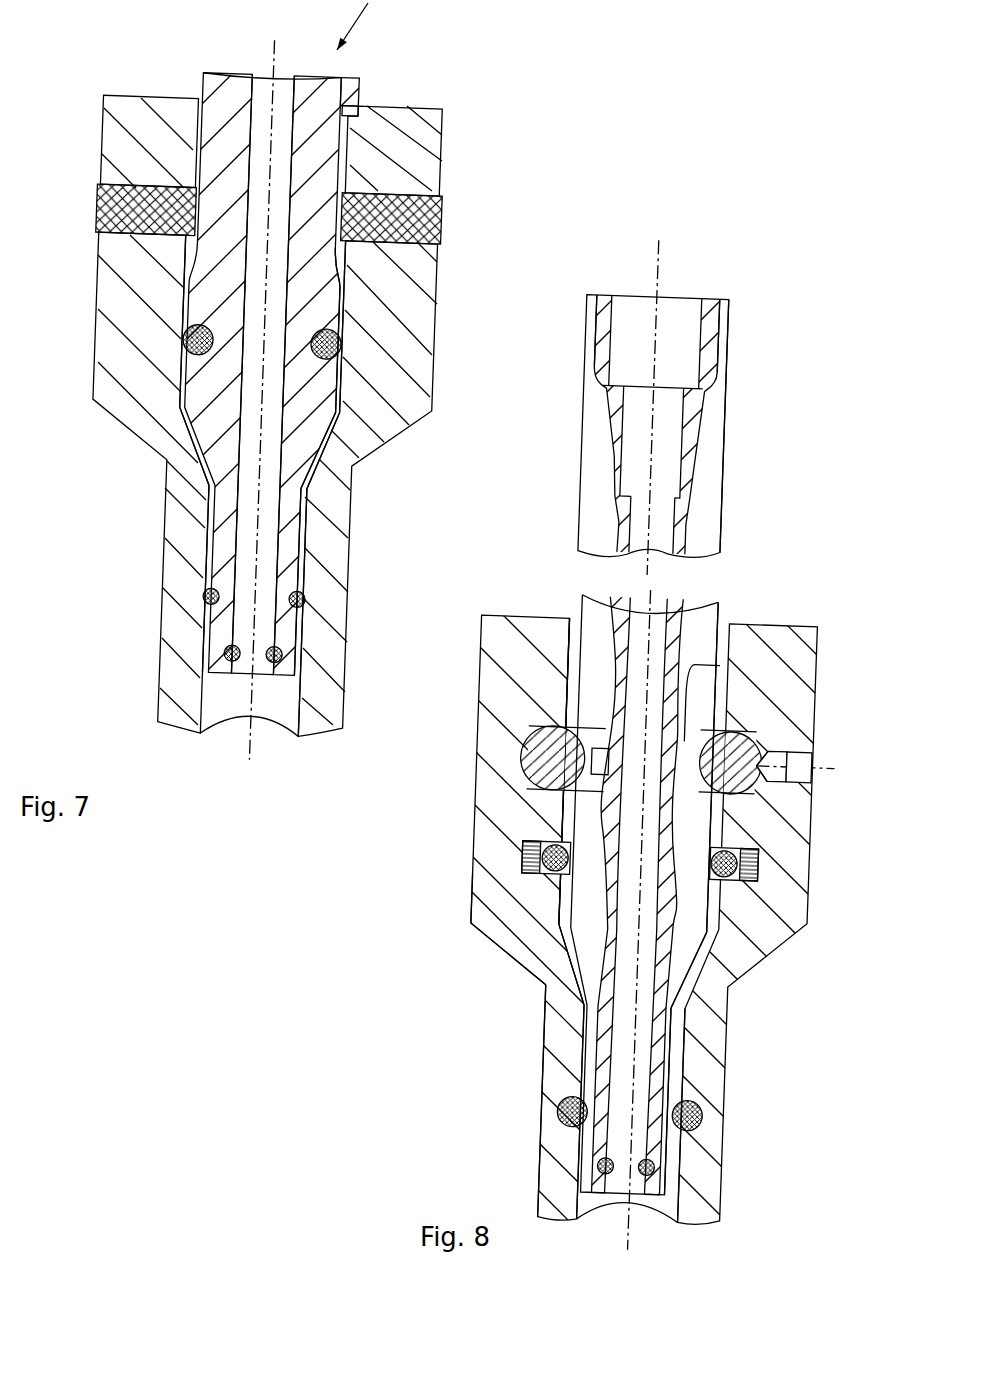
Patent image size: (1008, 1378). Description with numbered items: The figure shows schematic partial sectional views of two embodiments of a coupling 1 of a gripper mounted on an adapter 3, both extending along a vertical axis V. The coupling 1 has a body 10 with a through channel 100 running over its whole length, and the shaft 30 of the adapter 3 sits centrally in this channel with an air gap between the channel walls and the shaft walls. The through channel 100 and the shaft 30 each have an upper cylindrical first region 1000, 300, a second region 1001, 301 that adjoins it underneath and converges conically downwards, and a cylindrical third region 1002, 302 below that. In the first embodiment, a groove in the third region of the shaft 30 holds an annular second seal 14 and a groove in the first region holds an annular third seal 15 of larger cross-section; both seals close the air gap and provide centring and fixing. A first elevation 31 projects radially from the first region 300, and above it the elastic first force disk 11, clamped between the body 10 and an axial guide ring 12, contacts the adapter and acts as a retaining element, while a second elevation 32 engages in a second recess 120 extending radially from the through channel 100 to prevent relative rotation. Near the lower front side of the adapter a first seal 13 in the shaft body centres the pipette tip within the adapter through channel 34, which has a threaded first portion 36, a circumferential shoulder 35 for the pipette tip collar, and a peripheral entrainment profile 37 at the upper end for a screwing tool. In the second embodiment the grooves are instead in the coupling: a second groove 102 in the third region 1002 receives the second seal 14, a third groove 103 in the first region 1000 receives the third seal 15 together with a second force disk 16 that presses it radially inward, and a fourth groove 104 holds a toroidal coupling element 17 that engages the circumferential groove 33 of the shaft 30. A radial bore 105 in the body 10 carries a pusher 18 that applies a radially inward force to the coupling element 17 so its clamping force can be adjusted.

In FIG. 7, the coupling 1 is at (516, 70).
In FIG. 8, the coupling 1 is at (468, 605).
In FIG. 8, the adapter 3 is at (659, 210).
In FIG. 7, the vertical axis V is at (268, 58).
In FIG. 8, the vertical axis V is at (657, 262).
In FIG. 7, the body 10 is at (405, 407).
In FIG. 7, the through channel 100 is at (197, 105).
In FIG. 8, the through channel 100 is at (575, 620).
In FIG. 7, the first region 1000 is at (182, 298).
In FIG. 8, the first region 1000 is at (560, 812).
In FIG. 7, the second region 1001 is at (168, 440).
In FIG. 8, the second region 1001 is at (522, 960).
In FIG. 7, the third region 1002 is at (168, 670).
In FIG. 8, the third region 1002 is at (552, 1070).
In FIG. 8, the second groove 102 is at (722, 1142).
In FIG. 8, the third groove 103 is at (515, 903).
In FIG. 8, the fourth groove 104 is at (772, 812).
In FIG. 8, the radial bore 105 is at (790, 780).
In FIG. 7, the first force disk 11 is at (432, 230).
In FIG. 7, the axial guide ring 12 is at (425, 157).
In FIG. 7, the second recess 120 is at (365, 110).
In FIG. 7, the first seal 13 is at (278, 660).
In FIG. 8, the first seal 13 is at (598, 1163).
In FIG. 7, the second seal 14 is at (306, 594).
In FIG. 8, the second seal 14 is at (700, 1100).
In FIG. 7, the third seal 15 is at (342, 343).
In FIG. 8, the third seal 15 is at (528, 846).
In FIG. 8, the second force disk 16 is at (543, 876).
In FIG. 8, the coupling element 17 is at (758, 732).
In FIG. 8, the pusher 18 is at (795, 750).
In FIG. 7, the shaft 30 is at (308, 88).
In FIG. 8, the shaft 30 is at (717, 433).
In FIG. 7, the first region 300 is at (336, 382).
In FIG. 8, the first region 300 is at (725, 460).
In FIG. 7, the second region 301 is at (350, 440).
In FIG. 8, the second region 301 is at (725, 990).
In FIG. 7, the third region 302 is at (310, 537).
In FIG. 8, the third region 302 is at (700, 1195).
In FIG. 7, the first elevation 31 is at (338, 264).
In FIG. 7, the second elevation 32 is at (352, 88).
In FIG. 8, the circumferential groove 33 is at (717, 663).
In FIG. 7, the through channel 34 is at (262, 665).
In FIG. 8, the through channel 34 is at (665, 545).
In FIG. 8, the circumferential shoulder 35 is at (672, 490).
In FIG. 8, the thread 36 is at (698, 320).
In FIG. 8, the entrainment profile 37 is at (735, 331).